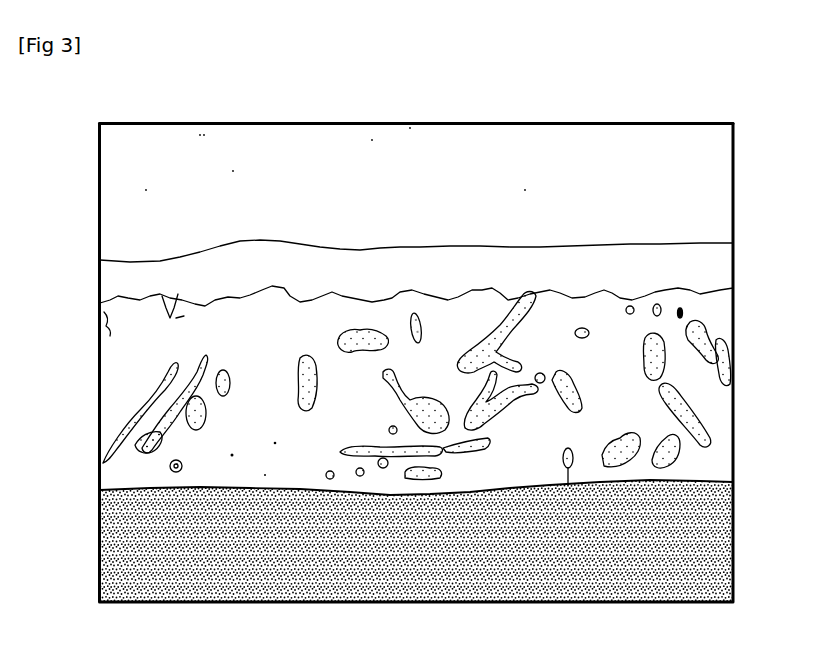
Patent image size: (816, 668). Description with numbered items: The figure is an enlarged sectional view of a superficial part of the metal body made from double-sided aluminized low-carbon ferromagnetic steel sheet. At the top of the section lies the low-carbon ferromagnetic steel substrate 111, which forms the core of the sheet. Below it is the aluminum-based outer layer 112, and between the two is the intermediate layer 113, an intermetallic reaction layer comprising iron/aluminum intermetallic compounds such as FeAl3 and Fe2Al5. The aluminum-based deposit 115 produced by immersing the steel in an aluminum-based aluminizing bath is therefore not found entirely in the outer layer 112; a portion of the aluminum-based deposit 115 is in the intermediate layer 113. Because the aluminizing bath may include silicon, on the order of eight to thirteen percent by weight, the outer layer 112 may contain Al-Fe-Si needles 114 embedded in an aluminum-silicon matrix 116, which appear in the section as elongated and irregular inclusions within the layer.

The low-carbon ferromagnetic steel substrate 111 is at (740, 126).
The aluminum-based outer layer 112 is at (740, 291).
The intermediate layer 113 is at (740, 247).
The Al-Fe-Si needles 114 is at (465, 455).
The aluminum-based deposit 115 is at (92, 274).
The aluminum-silicon matrix 116 is at (260, 462).